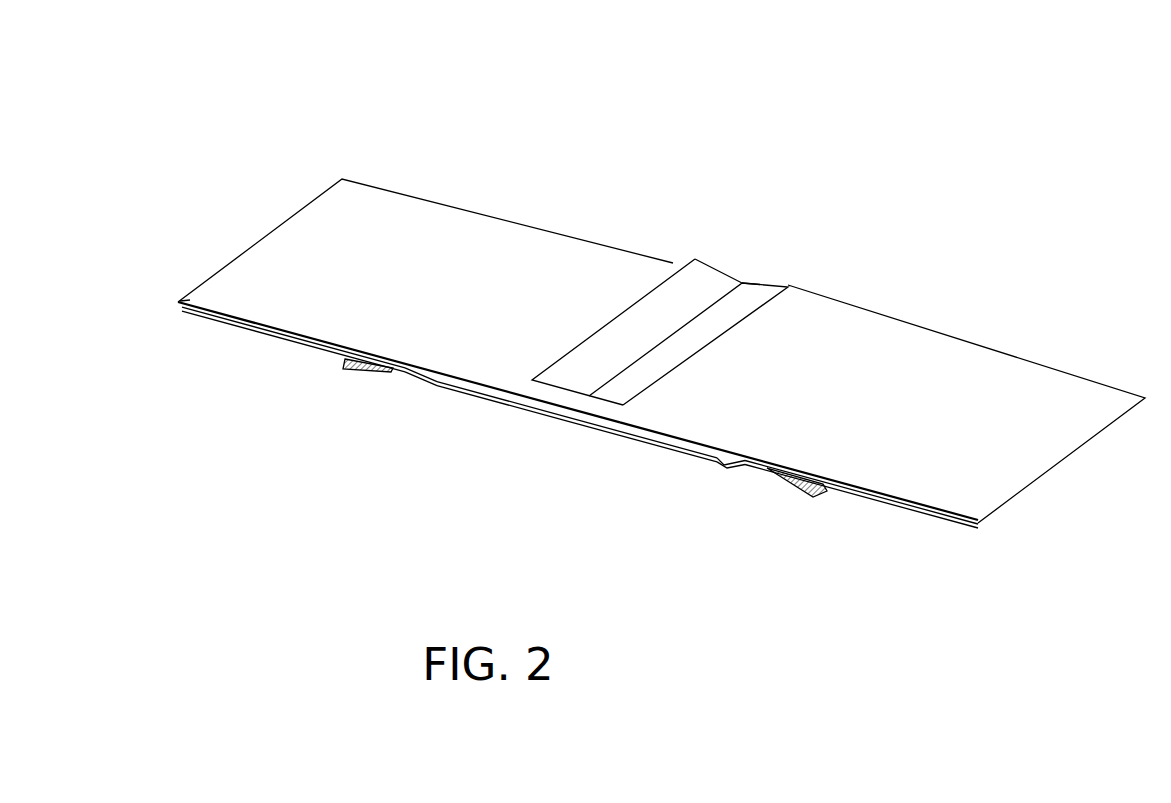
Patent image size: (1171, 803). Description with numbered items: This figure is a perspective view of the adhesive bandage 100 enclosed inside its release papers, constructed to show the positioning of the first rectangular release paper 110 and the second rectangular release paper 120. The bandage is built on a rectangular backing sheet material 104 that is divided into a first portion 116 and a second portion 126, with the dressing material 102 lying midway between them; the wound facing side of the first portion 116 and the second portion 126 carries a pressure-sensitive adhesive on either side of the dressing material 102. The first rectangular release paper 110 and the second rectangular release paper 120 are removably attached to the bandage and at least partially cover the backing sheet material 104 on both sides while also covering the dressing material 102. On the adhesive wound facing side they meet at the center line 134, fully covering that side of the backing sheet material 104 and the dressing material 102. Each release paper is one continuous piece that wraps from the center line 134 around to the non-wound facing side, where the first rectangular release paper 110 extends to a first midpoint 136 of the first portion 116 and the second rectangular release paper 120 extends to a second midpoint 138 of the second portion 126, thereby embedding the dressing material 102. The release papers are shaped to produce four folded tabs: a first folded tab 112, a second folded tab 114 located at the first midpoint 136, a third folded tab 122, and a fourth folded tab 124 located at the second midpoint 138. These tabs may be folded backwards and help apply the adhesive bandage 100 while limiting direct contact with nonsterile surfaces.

The adhesive bandage 100 is at (953, 122).
The dressing material 102 is at (673, 437).
The rectangular backing sheet material 104 is at (483, 395).
The first rectangular release paper 110 is at (410, 291).
The first folded tab 112 is at (565, 377).
The second folded tab 114 is at (367, 368).
The first portion 116 is at (352, 143).
The second rectangular release paper 120 is at (851, 408).
The third folded tab 122 is at (613, 392).
The fourth folded tab 124 is at (782, 487).
The second portion 126 is at (1162, 363).
The center line 134 is at (748, 273).
The first midpoint 136 is at (406, 382).
The second midpoint 138 is at (745, 478).